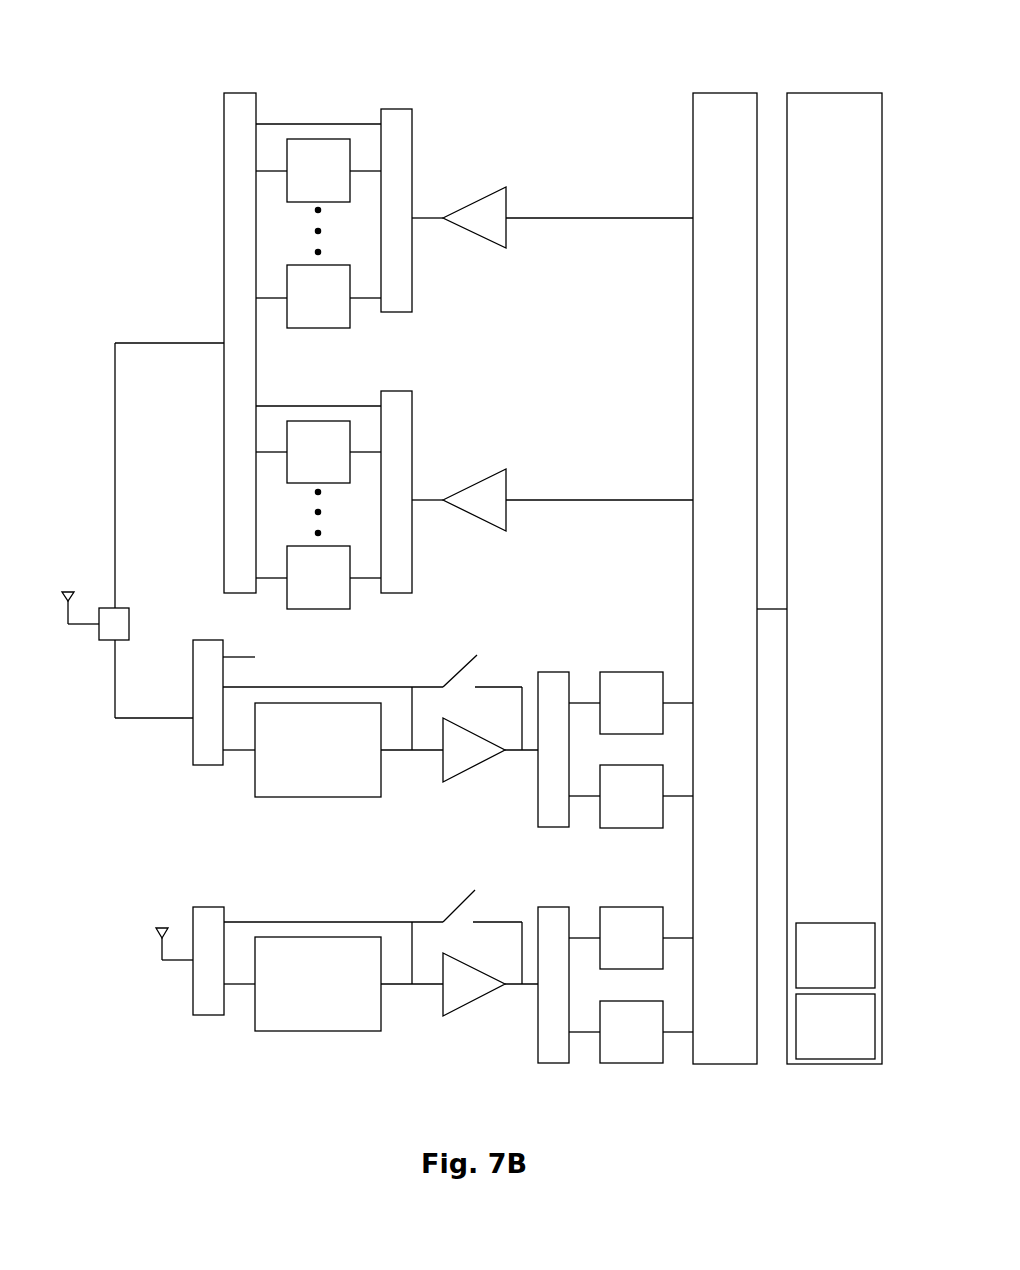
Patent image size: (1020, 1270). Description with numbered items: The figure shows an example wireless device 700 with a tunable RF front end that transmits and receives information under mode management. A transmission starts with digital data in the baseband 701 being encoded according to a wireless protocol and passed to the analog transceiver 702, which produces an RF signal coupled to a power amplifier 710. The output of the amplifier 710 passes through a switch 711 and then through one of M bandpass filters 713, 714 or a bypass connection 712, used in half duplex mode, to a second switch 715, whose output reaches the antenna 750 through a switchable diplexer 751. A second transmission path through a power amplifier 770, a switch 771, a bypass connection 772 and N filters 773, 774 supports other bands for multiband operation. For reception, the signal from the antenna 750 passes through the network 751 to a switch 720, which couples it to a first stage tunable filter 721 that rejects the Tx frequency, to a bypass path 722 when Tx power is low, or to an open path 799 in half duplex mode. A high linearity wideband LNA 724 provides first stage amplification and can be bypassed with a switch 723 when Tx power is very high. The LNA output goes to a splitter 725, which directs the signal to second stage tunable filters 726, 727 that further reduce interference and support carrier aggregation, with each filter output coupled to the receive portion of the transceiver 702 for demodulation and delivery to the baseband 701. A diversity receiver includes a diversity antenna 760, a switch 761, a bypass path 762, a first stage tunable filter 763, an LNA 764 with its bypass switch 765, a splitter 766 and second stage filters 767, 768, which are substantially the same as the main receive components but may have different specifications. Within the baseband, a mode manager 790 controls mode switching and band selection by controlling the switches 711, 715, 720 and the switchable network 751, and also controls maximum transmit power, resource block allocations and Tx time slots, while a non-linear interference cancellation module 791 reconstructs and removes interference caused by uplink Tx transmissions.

The wireless device 700 is at (108, 34).
The baseband 701 is at (848, 92).
The analog transceiver 702 is at (725, 92).
The power amplifier 710 is at (472, 518).
The switch 711 is at (412, 406).
The bypass connection 712 is at (362, 404).
The filter 713 is at (334, 420).
The filter 714 is at (318, 609).
The second switch 715 is at (224, 130).
The switch 720 is at (208, 765).
The first stage tunable filter 721 is at (318, 797).
The bypass path 722 is at (383, 686).
The switch 723 is at (462, 668).
The low noise amplifier 724 is at (472, 772).
The splitter 725 is at (553, 827).
The second stage tunable filter 726 is at (623, 828).
The second stage tunable filter 727 is at (631, 671).
The antenna 750 is at (66, 591).
The switchable diplexer 751 is at (129, 626).
The diversity antenna 760 is at (160, 926).
The switch 761 is at (208, 1015).
The bypass path 762 is at (330, 921).
The first stage tunable filter 763 is at (318, 1031).
The low noise amplifier 764 is at (472, 1005).
The switch 765 is at (462, 905).
The splitter 766 is at (553, 1063).
The second stage tunable filter 767 is at (623, 1063).
The second stage tunable filter 768 is at (631, 906).
The power amplifier 770 is at (472, 236).
The switch 771 is at (412, 125).
The bypass connection 772 is at (362, 122).
The filter 773 is at (334, 138).
The filter 774 is at (318, 328).
The mode manager 790 is at (835, 1059).
The non-linear interference cancellation module 791 is at (862, 922).
The open path 799 is at (243, 656).